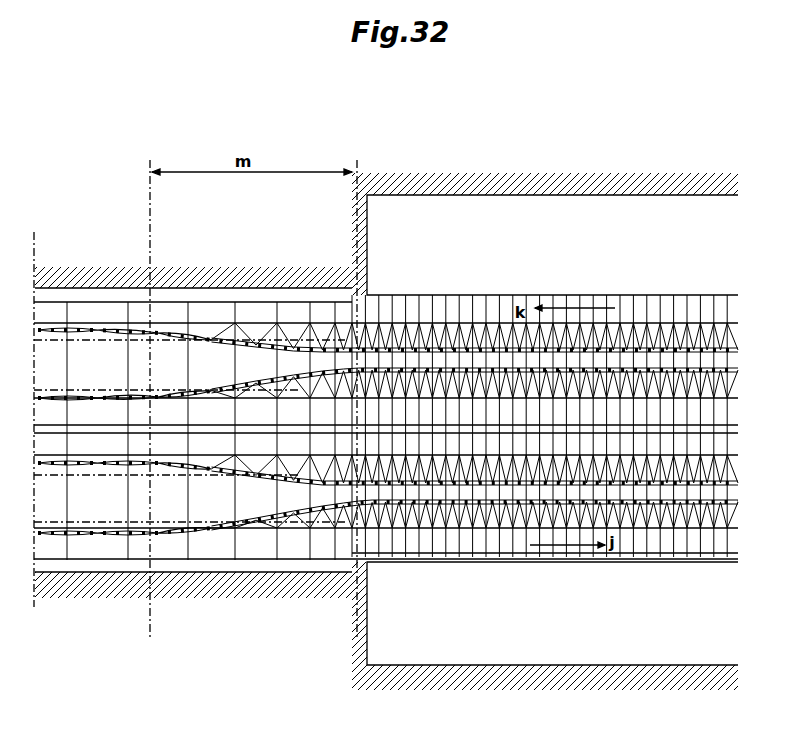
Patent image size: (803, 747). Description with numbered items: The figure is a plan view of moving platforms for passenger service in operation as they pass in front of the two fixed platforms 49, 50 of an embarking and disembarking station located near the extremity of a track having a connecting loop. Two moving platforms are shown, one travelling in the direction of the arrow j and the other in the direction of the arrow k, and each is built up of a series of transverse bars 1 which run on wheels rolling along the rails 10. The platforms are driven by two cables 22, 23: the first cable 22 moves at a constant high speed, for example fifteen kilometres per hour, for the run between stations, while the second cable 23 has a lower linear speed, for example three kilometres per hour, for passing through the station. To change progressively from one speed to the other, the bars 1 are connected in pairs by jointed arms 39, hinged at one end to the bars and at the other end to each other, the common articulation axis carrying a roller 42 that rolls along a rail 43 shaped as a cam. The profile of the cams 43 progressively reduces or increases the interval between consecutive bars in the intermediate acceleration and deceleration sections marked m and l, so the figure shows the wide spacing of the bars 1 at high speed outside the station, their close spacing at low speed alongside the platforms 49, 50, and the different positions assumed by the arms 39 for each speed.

The bars 1 is at (233, 366).
The rails 10 is at (118, 327).
The cable 22 is at (531, 340).
The cable 23 is at (458, 370).
The jointed arms 39 is at (228, 327).
The roller 42 is at (189, 431).
The rail forming a cam 43 is at (700, 478).
The platform of a station 49 is at (596, 207).
The platform of a station 50 is at (565, 651).